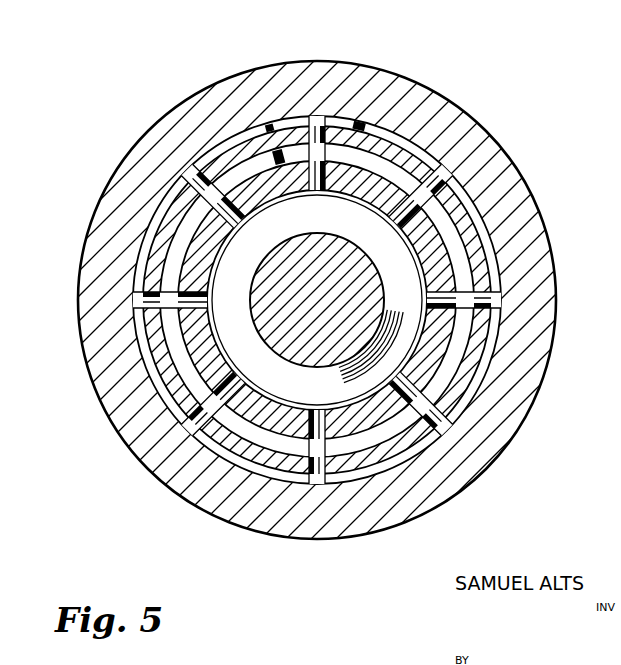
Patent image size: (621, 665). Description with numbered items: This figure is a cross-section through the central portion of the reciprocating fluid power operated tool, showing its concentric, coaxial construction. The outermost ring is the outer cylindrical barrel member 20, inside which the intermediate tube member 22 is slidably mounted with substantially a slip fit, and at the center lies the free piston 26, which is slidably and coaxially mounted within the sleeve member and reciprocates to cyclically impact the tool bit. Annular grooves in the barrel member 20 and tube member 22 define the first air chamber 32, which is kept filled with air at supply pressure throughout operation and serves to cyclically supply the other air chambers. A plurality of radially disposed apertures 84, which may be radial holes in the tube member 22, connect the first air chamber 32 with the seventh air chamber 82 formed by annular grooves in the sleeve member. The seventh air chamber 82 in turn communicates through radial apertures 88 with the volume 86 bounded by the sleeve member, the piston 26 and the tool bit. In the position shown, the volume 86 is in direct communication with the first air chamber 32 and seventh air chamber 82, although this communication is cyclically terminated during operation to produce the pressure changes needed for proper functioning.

The outer cylindrical barrel member 20 is at (303, 61).
The intermediate tube member 22 is at (440, 180).
The free piston 26 is at (306, 293).
The first air chamber 32 is at (365, 123).
The seventh air chamber 82 is at (352, 162).
The radially disposed apertures 84 is at (358, 125).
The volume 86 is at (276, 220).
The radial apertures 88 is at (318, 189).